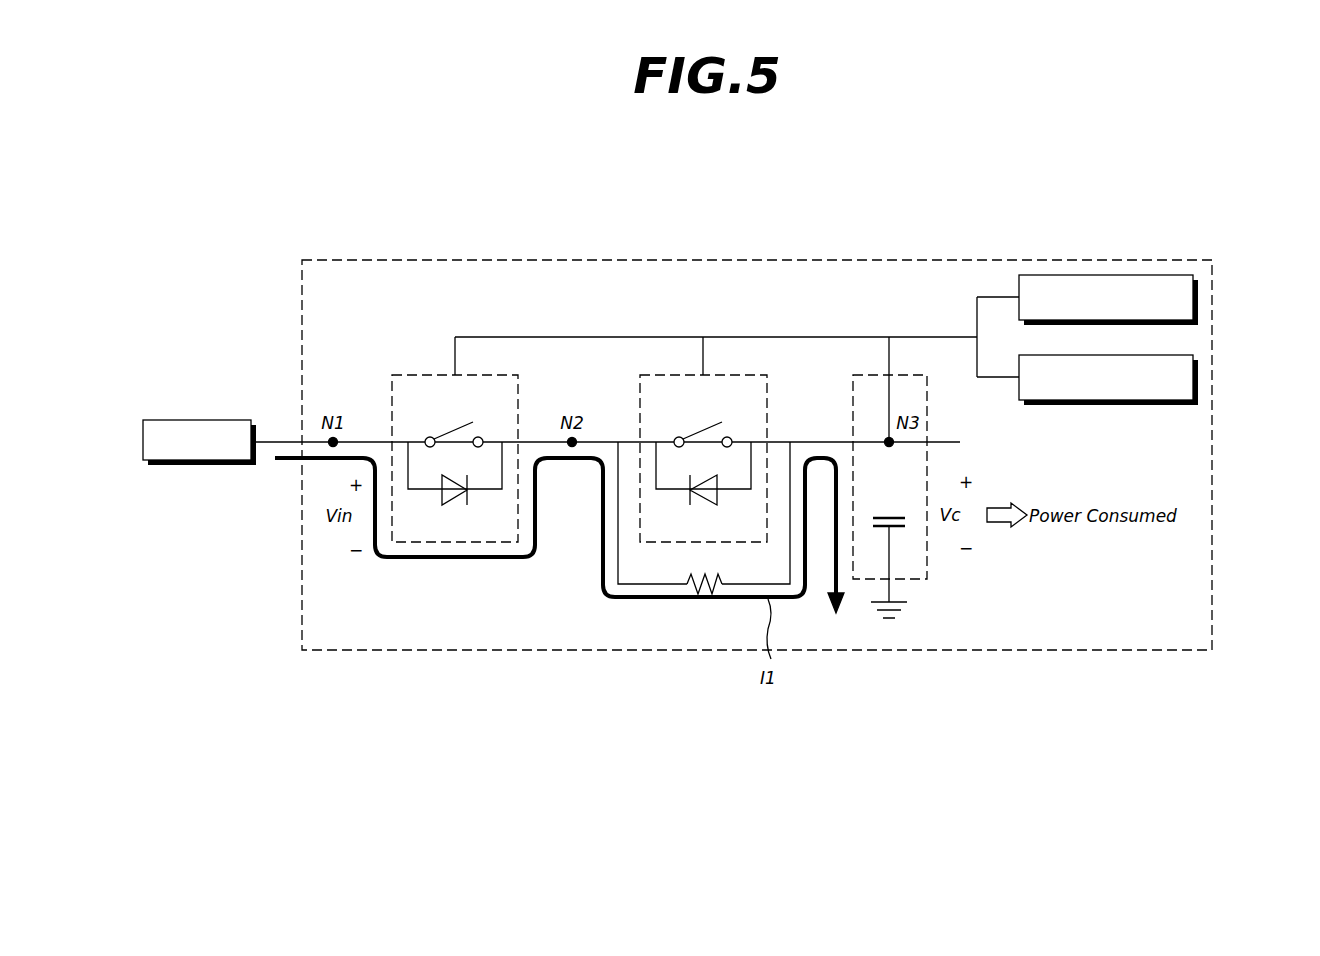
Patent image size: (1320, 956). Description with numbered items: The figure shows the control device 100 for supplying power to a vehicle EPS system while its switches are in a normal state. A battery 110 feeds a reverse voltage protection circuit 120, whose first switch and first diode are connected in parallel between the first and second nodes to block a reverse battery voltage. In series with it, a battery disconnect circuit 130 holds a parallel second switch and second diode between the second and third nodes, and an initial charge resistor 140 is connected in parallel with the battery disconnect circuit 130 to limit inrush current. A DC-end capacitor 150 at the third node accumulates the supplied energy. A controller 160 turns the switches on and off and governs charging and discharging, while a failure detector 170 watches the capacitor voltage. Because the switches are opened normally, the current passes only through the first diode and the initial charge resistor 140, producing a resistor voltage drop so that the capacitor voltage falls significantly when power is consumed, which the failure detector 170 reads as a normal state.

The control device 100 is at (705, 258).
The battery 110 is at (196, 418).
The reverse voltage protection circuit 120 is at (408, 373).
The battery disconnect circuit 130 is at (658, 372).
The initial charge resistor 140 is at (700, 600).
The DC-end capacitor 150 is at (868, 372).
The controller 160 is at (1198, 297).
The failure detector 170 is at (1198, 377).